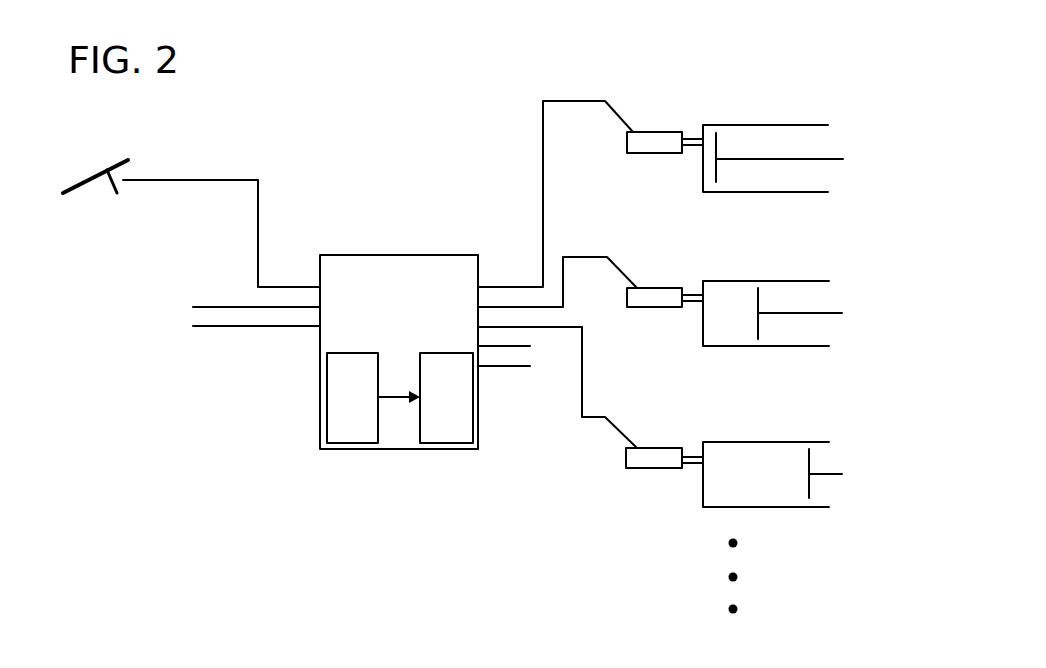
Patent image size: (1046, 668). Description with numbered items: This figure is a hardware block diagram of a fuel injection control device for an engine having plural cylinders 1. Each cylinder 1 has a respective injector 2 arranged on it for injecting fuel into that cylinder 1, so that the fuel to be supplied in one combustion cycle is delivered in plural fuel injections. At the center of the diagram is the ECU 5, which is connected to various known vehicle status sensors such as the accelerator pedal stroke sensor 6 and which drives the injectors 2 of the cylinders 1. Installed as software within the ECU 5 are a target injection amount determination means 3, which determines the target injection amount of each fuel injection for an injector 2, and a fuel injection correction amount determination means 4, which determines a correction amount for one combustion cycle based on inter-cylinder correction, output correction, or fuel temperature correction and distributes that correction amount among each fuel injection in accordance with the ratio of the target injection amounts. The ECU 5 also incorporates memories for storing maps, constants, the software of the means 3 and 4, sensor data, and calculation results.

The cylinder 1 is at (767, 125).
The injector 2 is at (656, 132).
The target injection amount determination means 3 is at (347, 449).
The fuel injection correction amount determination means 4 is at (448, 449).
The ECU 5 is at (386, 255).
The accelerator pedal stroke sensor 6 is at (96, 172).